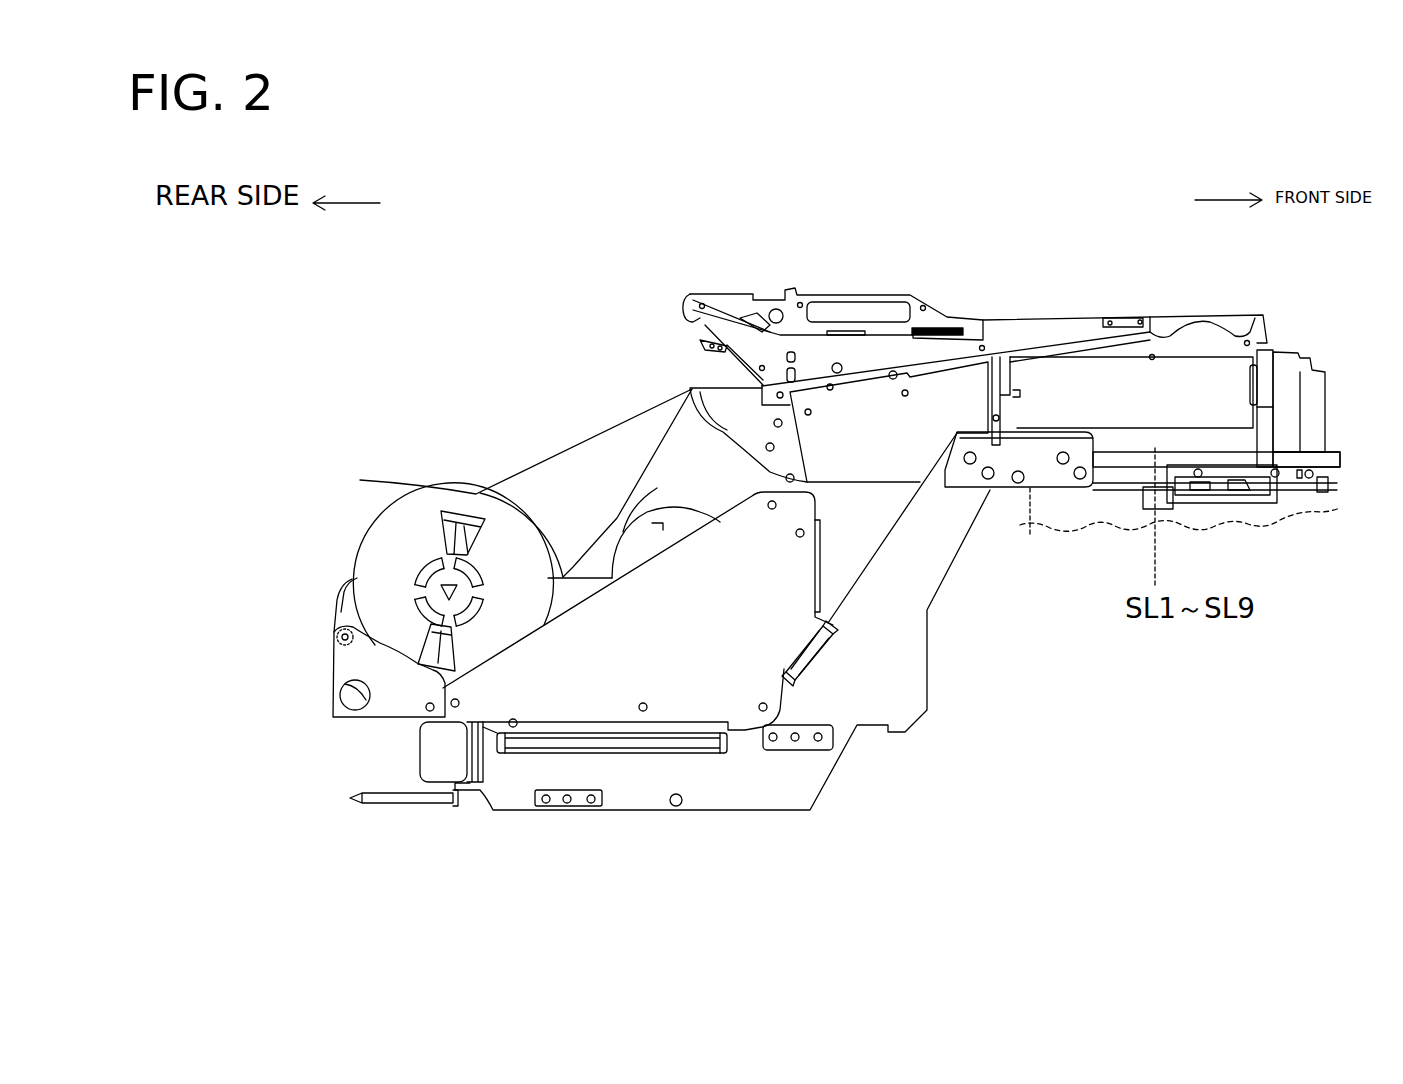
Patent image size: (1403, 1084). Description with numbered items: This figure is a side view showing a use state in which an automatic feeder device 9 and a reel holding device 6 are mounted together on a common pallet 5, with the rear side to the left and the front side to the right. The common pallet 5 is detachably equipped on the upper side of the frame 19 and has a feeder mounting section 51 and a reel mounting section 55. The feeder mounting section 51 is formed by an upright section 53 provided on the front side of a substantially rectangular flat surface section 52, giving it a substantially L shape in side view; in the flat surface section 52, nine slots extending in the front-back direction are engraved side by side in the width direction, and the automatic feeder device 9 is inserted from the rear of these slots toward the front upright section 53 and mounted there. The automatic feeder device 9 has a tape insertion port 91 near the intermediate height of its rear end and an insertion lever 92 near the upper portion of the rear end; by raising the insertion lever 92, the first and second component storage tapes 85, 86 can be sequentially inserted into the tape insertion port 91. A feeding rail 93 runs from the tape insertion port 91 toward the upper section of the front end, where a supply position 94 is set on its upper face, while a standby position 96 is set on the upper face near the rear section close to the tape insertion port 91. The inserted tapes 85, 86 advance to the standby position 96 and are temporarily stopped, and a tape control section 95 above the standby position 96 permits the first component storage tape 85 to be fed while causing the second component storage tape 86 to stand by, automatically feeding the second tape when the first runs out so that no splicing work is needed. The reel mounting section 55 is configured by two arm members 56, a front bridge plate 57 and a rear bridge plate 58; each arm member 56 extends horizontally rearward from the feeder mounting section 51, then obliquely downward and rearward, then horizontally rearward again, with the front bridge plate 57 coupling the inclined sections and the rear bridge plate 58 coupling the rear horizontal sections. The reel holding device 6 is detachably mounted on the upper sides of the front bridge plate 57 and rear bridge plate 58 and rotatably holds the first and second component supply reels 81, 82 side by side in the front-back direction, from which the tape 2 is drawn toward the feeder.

The carrier tape 2 is at (532, 458).
The common pallet 5 is at (1058, 540).
The reel holding device 6 is at (375, 393).
The automatic feeder device 9 is at (944, 258).
The frame 19 is at (1092, 521).
The feeder mounting section 51 is at (1235, 535).
The flat surface section 52 is at (1120, 517).
The upright section 53 is at (1285, 433).
The reel mounting section 55 is at (962, 682).
The arm member 56 is at (862, 700).
The front bridge plate 57 is at (823, 648).
The rear bridge plate 58 is at (640, 750).
The first component supply reel 81 is at (637, 540).
The second component supply reel 82 is at (405, 558).
The first component storage tape 85 is at (628, 498).
The second component storage tape 86 is at (568, 506).
The tape insertion port 91 is at (757, 385).
The insertion lever 92 is at (698, 346).
The feeding rail 93 is at (1030, 340).
The supply position 94 is at (1240, 318).
The tape control section 95 is at (803, 368).
The standby position 96 is at (816, 392).